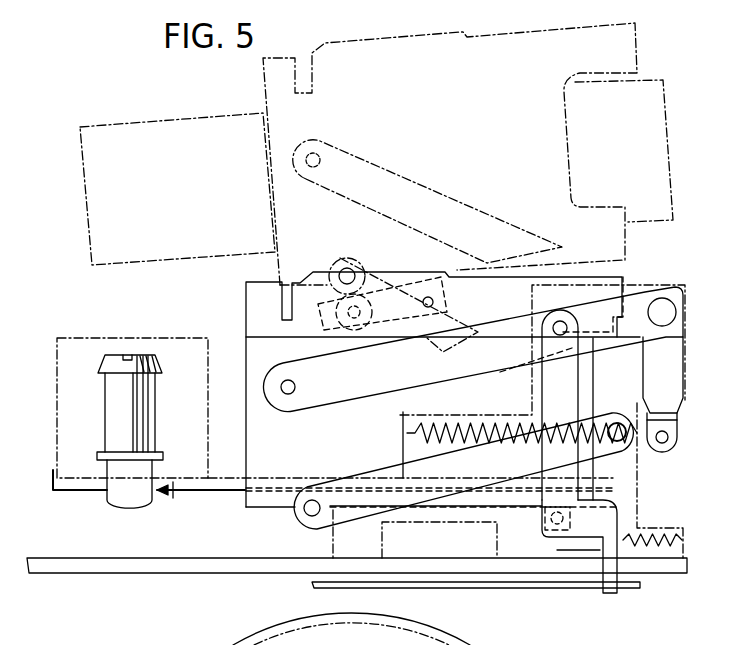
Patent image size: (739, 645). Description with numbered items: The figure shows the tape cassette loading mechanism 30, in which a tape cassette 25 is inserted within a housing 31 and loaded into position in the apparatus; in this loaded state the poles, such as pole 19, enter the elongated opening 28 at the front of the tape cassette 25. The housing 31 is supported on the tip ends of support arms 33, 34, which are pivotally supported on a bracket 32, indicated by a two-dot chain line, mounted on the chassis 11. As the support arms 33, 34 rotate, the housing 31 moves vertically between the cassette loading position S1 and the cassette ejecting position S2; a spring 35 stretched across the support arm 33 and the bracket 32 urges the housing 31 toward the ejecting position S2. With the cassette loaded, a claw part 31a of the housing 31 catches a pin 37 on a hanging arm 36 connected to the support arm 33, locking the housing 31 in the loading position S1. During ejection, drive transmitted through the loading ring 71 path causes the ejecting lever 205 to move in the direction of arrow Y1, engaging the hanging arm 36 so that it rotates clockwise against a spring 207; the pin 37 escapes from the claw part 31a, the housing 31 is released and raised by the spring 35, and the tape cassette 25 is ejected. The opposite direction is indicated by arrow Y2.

The chassis 11 is at (108, 557).
The pole 19 is at (107, 413).
The tape cassette 25 is at (197, 118).
The elongated opening 28 is at (176, 501).
The tape cassette loading mechanism 30 is at (520, 29).
The housing 31 is at (410, 36).
The claw part 31a is at (573, 555).
The bracket 32 is at (515, 412).
The support arm 33 is at (393, 173).
The support arm 34 is at (360, 263).
The spring 35 is at (462, 421).
The hanging arm 36 is at (573, 473).
The pin 37 is at (543, 523).
The loading ring 71 is at (236, 644).
The ejecting lever 205 is at (493, 590).
The spring 207 is at (648, 537).
The cassette loading position S1 is at (246, 410).
The cassette ejecting position S2 is at (262, 177).
The arrow Y1 is at (600, 613).
The arrow Y2 is at (653, 640).